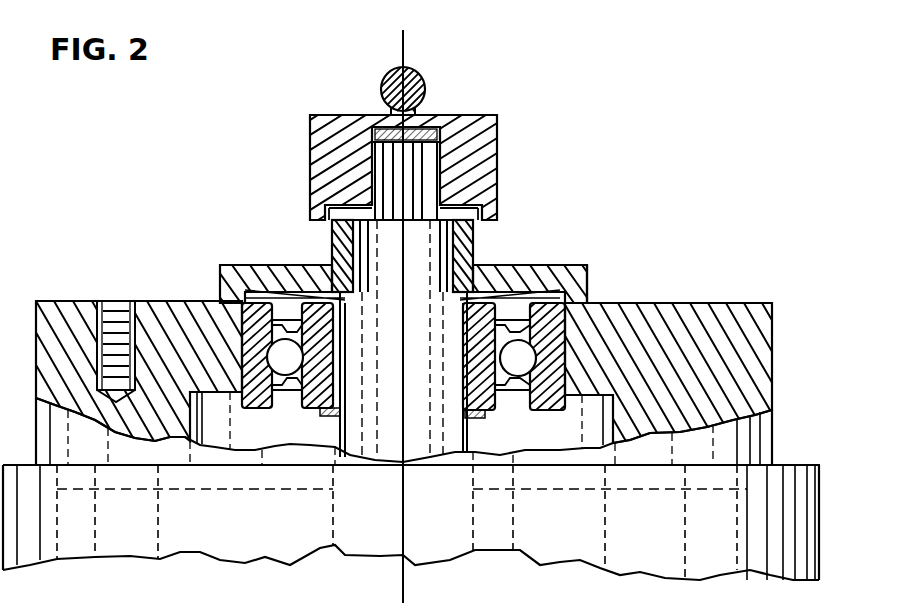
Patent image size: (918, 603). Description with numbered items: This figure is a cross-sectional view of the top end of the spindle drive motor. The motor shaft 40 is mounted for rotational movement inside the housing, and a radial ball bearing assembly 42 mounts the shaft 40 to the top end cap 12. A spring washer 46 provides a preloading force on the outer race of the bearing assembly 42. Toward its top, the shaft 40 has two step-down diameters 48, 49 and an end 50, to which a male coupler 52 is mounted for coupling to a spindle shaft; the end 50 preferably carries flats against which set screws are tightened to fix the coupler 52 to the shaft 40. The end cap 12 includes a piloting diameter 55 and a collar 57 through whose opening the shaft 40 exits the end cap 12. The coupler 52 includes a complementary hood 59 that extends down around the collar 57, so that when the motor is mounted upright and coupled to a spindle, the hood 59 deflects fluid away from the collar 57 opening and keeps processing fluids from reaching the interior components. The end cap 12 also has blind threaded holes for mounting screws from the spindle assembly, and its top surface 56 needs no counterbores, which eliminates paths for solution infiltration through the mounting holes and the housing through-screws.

The end cap 12 is at (755, 303).
The motor shaft 40 is at (398, 398).
The radial ball bearing assembly 42 is at (236, 326).
The spring washer 46 is at (403, 264).
The step-down diameter 48 is at (391, 292).
The step-down diameter 49 is at (466, 194).
The end 50 is at (433, 127).
The male coupler 52 is at (486, 156).
The piloting diameter 55 is at (592, 270).
The surface 56 is at (672, 303).
The collar 57 is at (338, 242).
The hood 59 is at (318, 210).